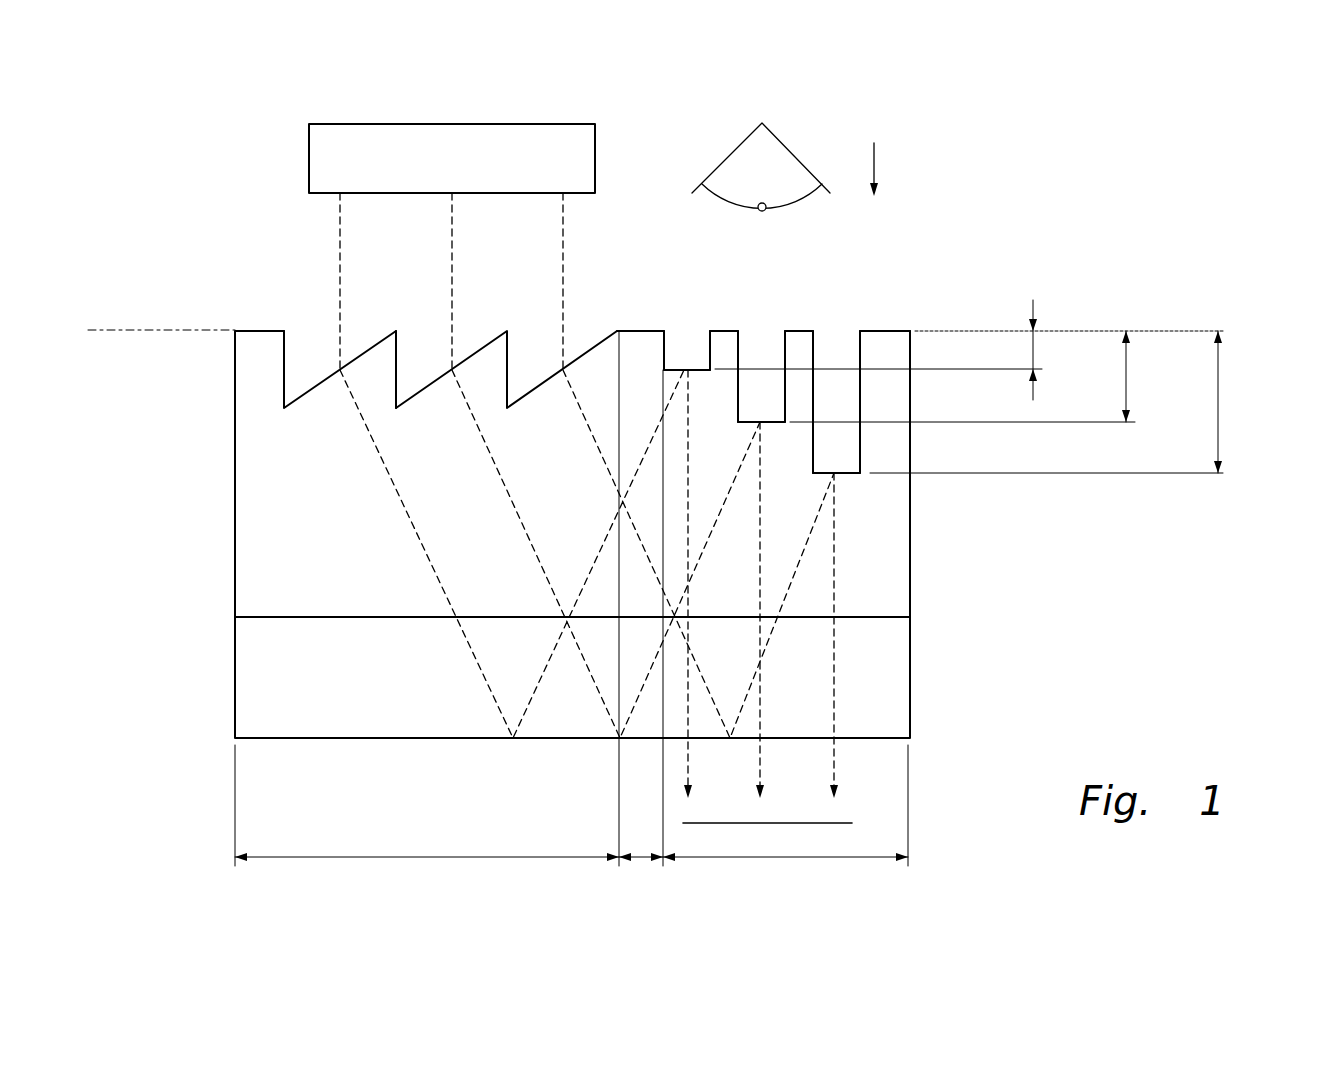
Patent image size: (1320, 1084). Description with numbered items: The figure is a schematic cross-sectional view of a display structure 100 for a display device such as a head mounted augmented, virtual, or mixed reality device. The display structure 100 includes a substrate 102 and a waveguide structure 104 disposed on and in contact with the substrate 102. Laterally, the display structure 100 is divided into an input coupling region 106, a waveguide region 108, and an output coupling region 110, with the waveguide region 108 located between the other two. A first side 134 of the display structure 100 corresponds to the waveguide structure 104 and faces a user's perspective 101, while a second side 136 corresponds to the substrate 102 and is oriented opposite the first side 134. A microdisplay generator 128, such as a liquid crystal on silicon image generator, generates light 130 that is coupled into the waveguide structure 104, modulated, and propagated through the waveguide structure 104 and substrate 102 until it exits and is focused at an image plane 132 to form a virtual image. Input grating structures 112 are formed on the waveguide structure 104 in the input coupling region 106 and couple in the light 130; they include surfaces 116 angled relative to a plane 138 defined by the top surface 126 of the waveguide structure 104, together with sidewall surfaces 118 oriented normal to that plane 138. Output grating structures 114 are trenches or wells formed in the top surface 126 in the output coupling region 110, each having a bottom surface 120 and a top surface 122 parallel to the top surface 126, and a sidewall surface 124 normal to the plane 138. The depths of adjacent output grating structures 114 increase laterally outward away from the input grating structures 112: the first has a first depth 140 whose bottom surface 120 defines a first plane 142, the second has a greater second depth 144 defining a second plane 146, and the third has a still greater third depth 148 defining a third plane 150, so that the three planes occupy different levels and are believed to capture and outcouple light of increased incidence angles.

The display structure 100 is at (208, 170).
The user's perspective 101 is at (878, 158).
The substrate 102 is at (908, 676).
The waveguide structure 104 is at (908, 575).
The input coupling region 106 is at (421, 858).
The waveguide region 108 is at (641, 860).
The output coupling region 110 is at (786, 860).
The input grating structures 112 is at (488, 362).
The output grating structures 114 is at (730, 352).
The angled surfaces 116 is at (372, 345).
The sidewall surfaces 118 is at (398, 350).
The bottom surface 120 is at (681, 366).
The top surface 122 is at (726, 330).
The sidewall surface 124 is at (661, 364).
The top surface 126 is at (641, 328).
The microdisplay generator 128 is at (434, 170).
The light 130 is at (340, 266).
The image plane 132 is at (787, 821).
The first side 134 is at (948, 276).
The second side 136 is at (413, 784).
The plane 138 is at (113, 333).
The first depth 140 is at (1036, 347).
The first plane 142 is at (927, 371).
The second depth 144 is at (1128, 375).
The second plane 146 is at (960, 423).
The third depth 148 is at (1221, 403).
The third plane 150 is at (995, 474).